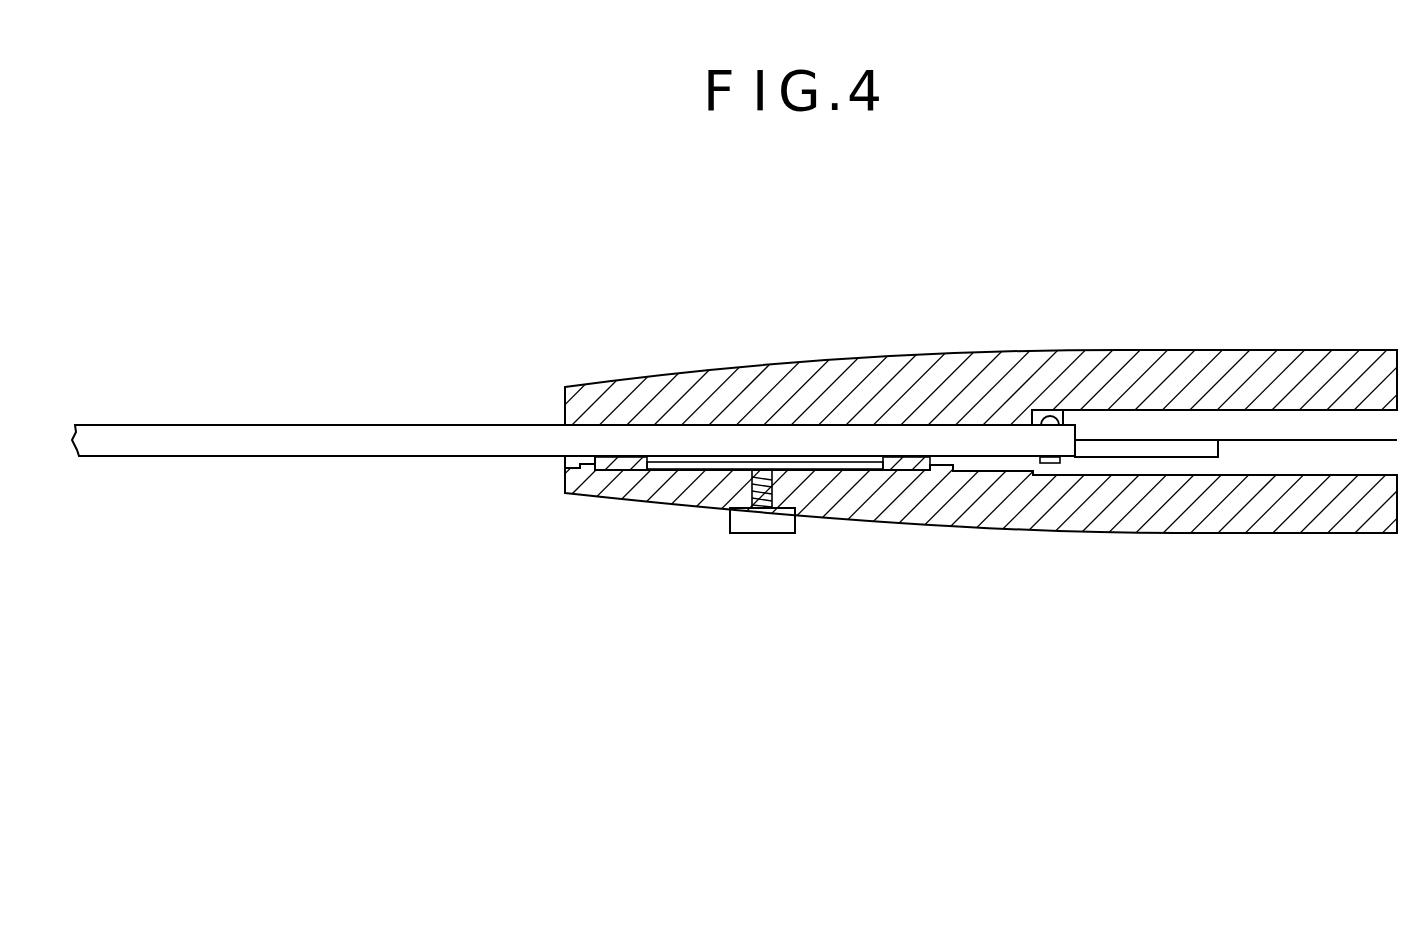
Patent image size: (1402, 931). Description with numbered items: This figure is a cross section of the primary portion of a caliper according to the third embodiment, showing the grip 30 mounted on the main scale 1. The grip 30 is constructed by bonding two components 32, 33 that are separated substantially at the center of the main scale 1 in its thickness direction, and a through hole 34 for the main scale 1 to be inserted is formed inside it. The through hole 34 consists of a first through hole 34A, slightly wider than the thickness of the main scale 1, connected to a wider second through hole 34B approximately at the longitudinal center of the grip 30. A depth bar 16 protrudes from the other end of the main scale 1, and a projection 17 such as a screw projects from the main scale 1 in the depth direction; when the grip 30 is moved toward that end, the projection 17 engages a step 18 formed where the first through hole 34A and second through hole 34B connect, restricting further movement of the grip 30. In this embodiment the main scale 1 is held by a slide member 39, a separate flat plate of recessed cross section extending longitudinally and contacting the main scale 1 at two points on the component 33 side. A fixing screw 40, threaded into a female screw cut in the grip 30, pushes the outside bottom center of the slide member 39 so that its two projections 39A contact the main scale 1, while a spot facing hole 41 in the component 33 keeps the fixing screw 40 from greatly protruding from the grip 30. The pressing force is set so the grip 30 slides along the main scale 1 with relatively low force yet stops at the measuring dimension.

The main scale 1 is at (289, 435).
The depth bar 16 is at (1117, 448).
The projection 17 is at (1058, 414).
The step 18 is at (1039, 412).
The grip 30 is at (872, 411).
The component 32 is at (1363, 365).
The component 33 is at (1333, 527).
The through hole 34 is at (1315, 432).
The first through hole 34A is at (977, 463).
The second through hole 34B is at (1283, 465).
The slide member 39 is at (648, 470).
The projections 39A is at (607, 468).
The fixing screw 40 is at (752, 528).
The spot facing hole 41 is at (797, 515).